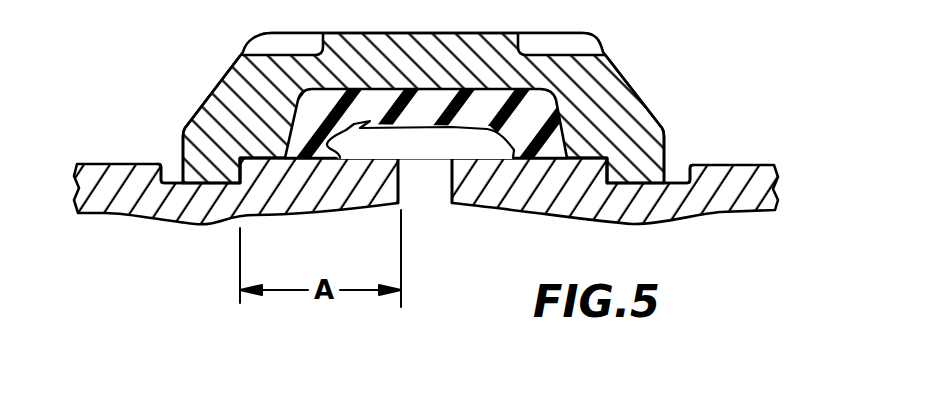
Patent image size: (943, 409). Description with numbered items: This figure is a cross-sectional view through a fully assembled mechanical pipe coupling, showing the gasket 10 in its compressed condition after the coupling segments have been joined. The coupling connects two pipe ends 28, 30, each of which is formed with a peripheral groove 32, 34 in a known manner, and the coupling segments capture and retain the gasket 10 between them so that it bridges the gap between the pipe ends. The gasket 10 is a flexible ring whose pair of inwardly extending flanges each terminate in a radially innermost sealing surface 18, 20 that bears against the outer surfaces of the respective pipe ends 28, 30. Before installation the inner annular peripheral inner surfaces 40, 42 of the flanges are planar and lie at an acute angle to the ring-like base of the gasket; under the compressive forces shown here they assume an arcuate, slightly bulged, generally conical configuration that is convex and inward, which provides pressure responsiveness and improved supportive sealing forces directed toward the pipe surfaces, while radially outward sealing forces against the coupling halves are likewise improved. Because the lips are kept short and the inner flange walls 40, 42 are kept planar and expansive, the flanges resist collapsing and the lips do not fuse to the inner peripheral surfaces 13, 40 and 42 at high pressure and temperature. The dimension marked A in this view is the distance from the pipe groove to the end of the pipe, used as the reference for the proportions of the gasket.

The gasket 10 is at (547, 55).
The inner peripheral surface 13 is at (420, 123).
The radially innermost sealing surface 18 is at (295, 208).
The radially innermost sealing surface 20 is at (513, 203).
The pipe end 28 is at (234, 193).
The pipe end 30 is at (630, 172).
The peripheral groove 32 is at (173, 182).
The peripheral groove 34 is at (676, 171).
The inner annular peripheral inner surface 40 is at (413, 123).
The inner annular peripheral inner surface 42 is at (463, 116).